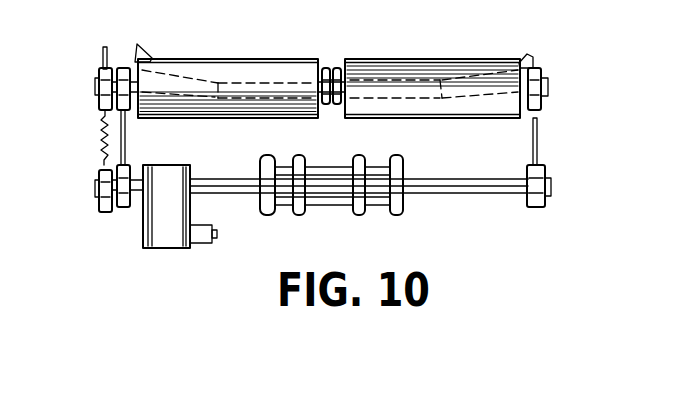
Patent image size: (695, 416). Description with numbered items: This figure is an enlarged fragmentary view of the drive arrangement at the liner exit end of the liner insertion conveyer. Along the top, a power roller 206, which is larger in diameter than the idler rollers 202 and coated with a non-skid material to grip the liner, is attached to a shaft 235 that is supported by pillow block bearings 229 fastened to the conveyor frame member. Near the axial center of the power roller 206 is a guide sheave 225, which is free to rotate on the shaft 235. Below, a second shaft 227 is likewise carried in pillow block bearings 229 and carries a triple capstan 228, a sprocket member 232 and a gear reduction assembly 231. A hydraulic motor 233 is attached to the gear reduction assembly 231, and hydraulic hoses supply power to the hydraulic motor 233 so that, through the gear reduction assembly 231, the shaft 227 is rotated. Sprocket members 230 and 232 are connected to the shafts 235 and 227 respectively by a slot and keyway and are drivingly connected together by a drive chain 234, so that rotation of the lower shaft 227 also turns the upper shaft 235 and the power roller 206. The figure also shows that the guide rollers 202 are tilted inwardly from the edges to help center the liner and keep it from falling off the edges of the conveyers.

The idler rollers 202 is at (188, 72).
The power roller 206 is at (390, 70).
The guide sheave 225 is at (325, 68).
The shaft 227 is at (440, 196).
The triple capstan 228 is at (335, 206).
The pillow block bearings 229 is at (125, 208).
The sprocket member 230 is at (100, 74).
The gear reduction assembly 231 is at (170, 240).
The sprocket member 232 is at (98, 180).
The hydraulic motor 233 is at (200, 228).
The drive chain 234 is at (100, 145).
The shaft 235 is at (530, 68).